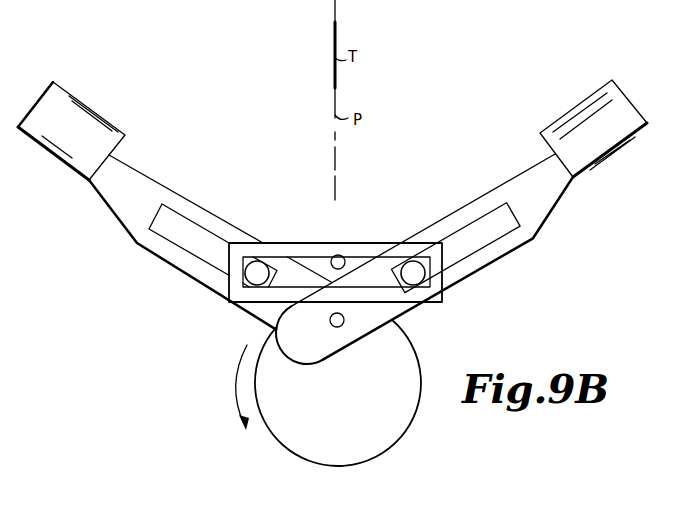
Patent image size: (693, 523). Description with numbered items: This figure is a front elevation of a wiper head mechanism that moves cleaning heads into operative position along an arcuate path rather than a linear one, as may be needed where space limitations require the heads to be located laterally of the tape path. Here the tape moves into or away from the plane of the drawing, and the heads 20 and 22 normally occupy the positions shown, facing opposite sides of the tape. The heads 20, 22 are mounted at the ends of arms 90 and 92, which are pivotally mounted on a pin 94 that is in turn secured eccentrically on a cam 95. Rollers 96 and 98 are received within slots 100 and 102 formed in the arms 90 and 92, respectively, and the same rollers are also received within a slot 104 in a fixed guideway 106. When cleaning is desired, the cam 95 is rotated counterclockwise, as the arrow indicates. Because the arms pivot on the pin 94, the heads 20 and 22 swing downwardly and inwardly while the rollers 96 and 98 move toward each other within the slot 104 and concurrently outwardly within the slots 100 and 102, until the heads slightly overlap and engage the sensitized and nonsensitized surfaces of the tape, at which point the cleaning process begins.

The cleaning head 20 is at (88, 125).
The cleaning head 22 is at (575, 123).
The arm 90 is at (557, 210).
The arm 92 is at (137, 244).
The pin 94 is at (344, 326).
The cam 95 is at (407, 431).
The roller 96 is at (420, 282).
The roller 98 is at (246, 283).
The slot 100 is at (472, 228).
The slot 102 is at (190, 222).
The slot 104 is at (345, 259).
The fixed guideway 106 is at (302, 243).